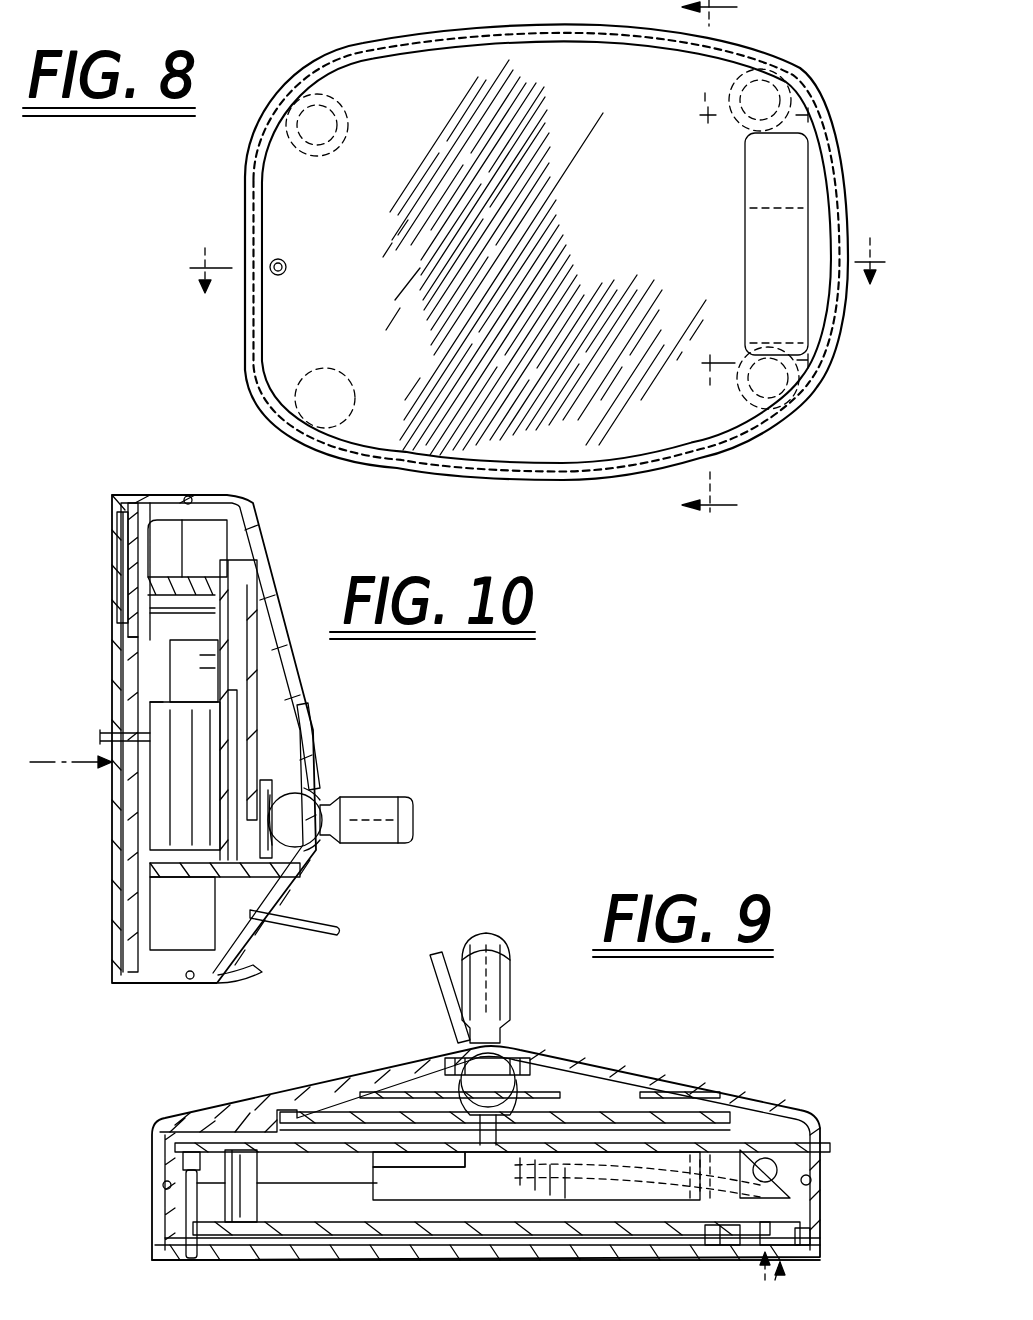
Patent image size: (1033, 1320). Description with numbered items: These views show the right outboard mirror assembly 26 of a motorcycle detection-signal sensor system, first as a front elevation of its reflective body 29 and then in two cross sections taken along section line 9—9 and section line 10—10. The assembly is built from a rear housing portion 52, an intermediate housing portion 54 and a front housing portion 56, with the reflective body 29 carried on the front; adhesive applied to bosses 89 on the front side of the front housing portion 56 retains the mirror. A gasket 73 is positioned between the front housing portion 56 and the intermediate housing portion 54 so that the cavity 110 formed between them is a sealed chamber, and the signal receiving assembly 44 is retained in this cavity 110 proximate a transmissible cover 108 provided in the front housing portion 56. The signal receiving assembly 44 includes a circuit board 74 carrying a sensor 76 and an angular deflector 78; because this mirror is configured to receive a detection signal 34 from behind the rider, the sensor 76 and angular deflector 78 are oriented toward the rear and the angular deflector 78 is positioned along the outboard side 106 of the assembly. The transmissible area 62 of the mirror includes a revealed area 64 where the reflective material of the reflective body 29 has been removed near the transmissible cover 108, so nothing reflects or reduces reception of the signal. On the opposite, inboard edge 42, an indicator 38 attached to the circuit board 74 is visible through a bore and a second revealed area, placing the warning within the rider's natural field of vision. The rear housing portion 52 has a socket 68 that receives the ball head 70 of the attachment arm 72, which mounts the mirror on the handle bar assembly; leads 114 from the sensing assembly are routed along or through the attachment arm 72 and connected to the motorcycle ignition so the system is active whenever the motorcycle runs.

In FIG. 8, the section line 9— 9 is at (537, 251).
In FIG. 8, the section line 10— 10 is at (715, 256).
In FIG. 8, the right outboard mirror assembly 26 is at (330, 45).
In FIG. 10, the right outboard mirror assembly 26 is at (86, 476).
In FIG. 9, the right outboard mirror assembly 26 is at (92, 1197).
In FIG. 8, the reflective body 29 is at (431, 68).
In FIG. 10, the reflective body 29 is at (112, 553).
In FIG. 9, the reflective body 29 is at (362, 1261).
In FIG. 10, the detection signal 34 is at (68, 761).
In FIG. 9, the detection signal 34 is at (762, 1297).
In FIG. 8, the indicator 38 is at (286, 260).
In FIG. 10, the indicator 38 is at (112, 731).
In FIG. 9, the indicator 38 is at (192, 1259).
In FIG. 8, the inboard edge 42 is at (250, 182).
In FIG. 9, the inboard edge 42 is at (160, 1227).
In FIG. 10, the signal receiving assembly 44 is at (228, 737).
In FIG. 9, the signal receiving assembly 44 is at (615, 1148).
In FIG. 10, the rear housing portion 52 is at (252, 514).
In FIG. 9, the rear housing portion 52 is at (232, 1101).
In FIG. 10, the intermediate housing portion 54 is at (205, 495).
In FIG. 9, the intermediate housing portion 54 is at (153, 1149).
In FIG. 10, the front housing portion 56 is at (145, 500).
In FIG. 9, the front housing portion 56 is at (155, 1251).
In FIG. 8, the transmissible area 62 is at (808, 305).
In FIG. 9, the transmissible area 62 is at (780, 1256).
In FIG. 9, the revealed area 64 is at (805, 1251).
In FIG. 10, the socket 68 is at (305, 796).
In FIG. 9, the socket 68 is at (503, 1096).
In FIG. 10, the ball head 70 is at (308, 831).
In FIG. 9, the ball head 70 is at (462, 1086).
In FIG. 10, the attachment arm 72 is at (383, 801).
In FIG. 9, the attachment arm 72 is at (503, 986).
In FIG. 10, the gasket 73 is at (188, 496).
In FIG. 9, the gasket 73 is at (162, 1186).
In FIG. 10, the circuit board 74 is at (156, 695).
In FIG. 9, the circuit board 74 is at (700, 1198).
In FIG. 9, the sensor 76 is at (692, 1153).
In FIG. 10, the angular deflector 78 is at (178, 801).
In FIG. 9, the angular deflector 78 is at (775, 1164).
In FIG. 8, the bosses 89 is at (787, 86).
In FIG. 10, the bosses 89 is at (178, 901).
In FIG. 9, the bosses 89 is at (258, 1211).
In FIG. 8, the outboard side 106 is at (840, 127).
In FIG. 9, the outboard side 106 is at (822, 1196).
In FIG. 9, the transmissible cover 108 is at (722, 1248).
In FIG. 10, the cavity 110 is at (205, 543).
In FIG. 9, the cavity 110 is at (470, 1216).
In FIG. 10, the leads 114 is at (315, 931).
In FIG. 9, the leads 114 is at (440, 979).